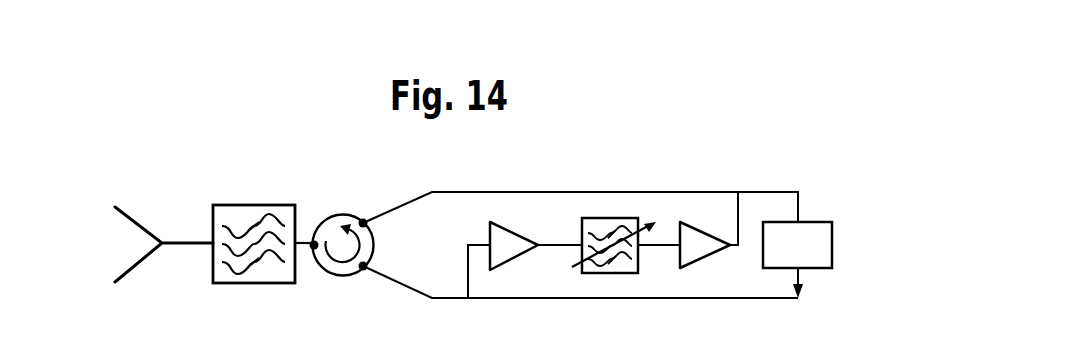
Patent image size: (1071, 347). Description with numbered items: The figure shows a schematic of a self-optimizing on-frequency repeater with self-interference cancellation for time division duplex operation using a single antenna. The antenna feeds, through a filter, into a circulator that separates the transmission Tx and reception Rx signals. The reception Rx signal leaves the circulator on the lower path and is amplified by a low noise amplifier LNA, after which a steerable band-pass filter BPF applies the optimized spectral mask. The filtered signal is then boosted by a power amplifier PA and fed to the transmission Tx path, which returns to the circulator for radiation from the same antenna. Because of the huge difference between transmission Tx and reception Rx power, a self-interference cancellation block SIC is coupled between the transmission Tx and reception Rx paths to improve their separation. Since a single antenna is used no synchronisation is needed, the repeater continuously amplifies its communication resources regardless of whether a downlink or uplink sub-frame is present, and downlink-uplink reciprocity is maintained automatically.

The element circulator is at (353, 276).
The transmission signal Tx is at (580, 190).
The reception signal Rx is at (580, 271).
The low noise amplifier LNA is at (536, 258).
The steerable band-pass filter BPF is at (596, 211).
The power amplifier PA is at (709, 243).
The self-interference cancellation SIC is at (797, 260).